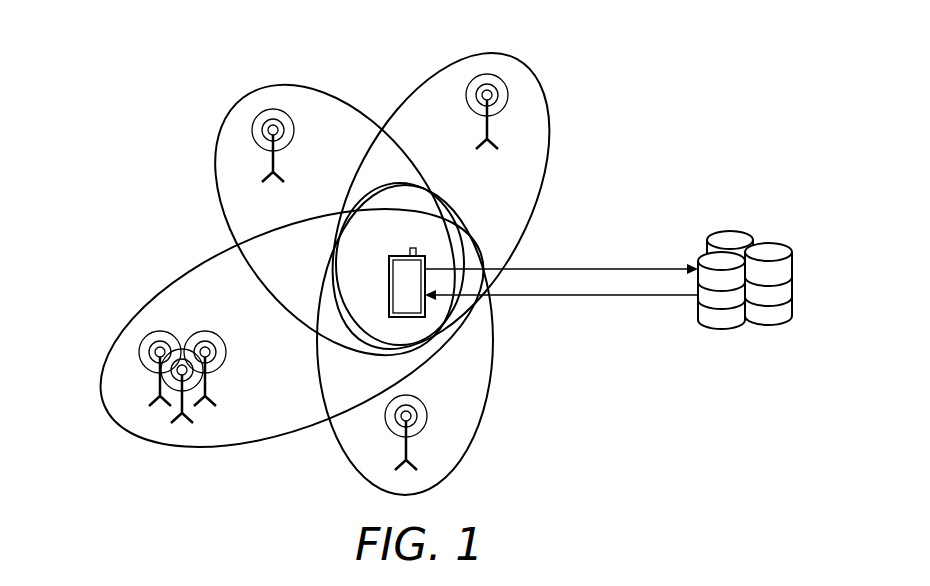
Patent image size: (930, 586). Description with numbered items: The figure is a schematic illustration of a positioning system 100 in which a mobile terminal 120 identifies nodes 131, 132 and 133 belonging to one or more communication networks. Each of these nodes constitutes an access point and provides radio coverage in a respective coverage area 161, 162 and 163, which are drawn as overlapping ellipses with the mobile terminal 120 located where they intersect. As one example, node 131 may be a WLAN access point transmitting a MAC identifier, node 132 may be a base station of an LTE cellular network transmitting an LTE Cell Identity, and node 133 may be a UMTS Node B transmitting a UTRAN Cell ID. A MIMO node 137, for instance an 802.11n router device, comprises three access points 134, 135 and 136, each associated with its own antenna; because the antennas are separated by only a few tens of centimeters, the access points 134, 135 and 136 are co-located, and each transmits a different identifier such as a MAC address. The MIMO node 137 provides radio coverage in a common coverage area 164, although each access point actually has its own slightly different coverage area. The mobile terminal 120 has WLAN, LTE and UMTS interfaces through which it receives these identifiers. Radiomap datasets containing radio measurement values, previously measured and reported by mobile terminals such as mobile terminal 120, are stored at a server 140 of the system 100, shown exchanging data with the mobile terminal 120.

The positioning system 100 is at (692, 76).
The mobile terminal 120 is at (391, 317).
The node 131 is at (487, 74).
The node 132 is at (273, 109).
The node 133 is at (427, 414).
The access point 134 is at (157, 380).
The access point 135 is at (178, 422).
The access point 136 is at (210, 382).
The MIMO node 137 is at (170, 385).
The server 140 is at (724, 323).
The coverage area 161 is at (547, 144).
The coverage area 162 is at (214, 162).
The coverage area 163 is at (494, 356).
The coverage area 164 is at (173, 278).